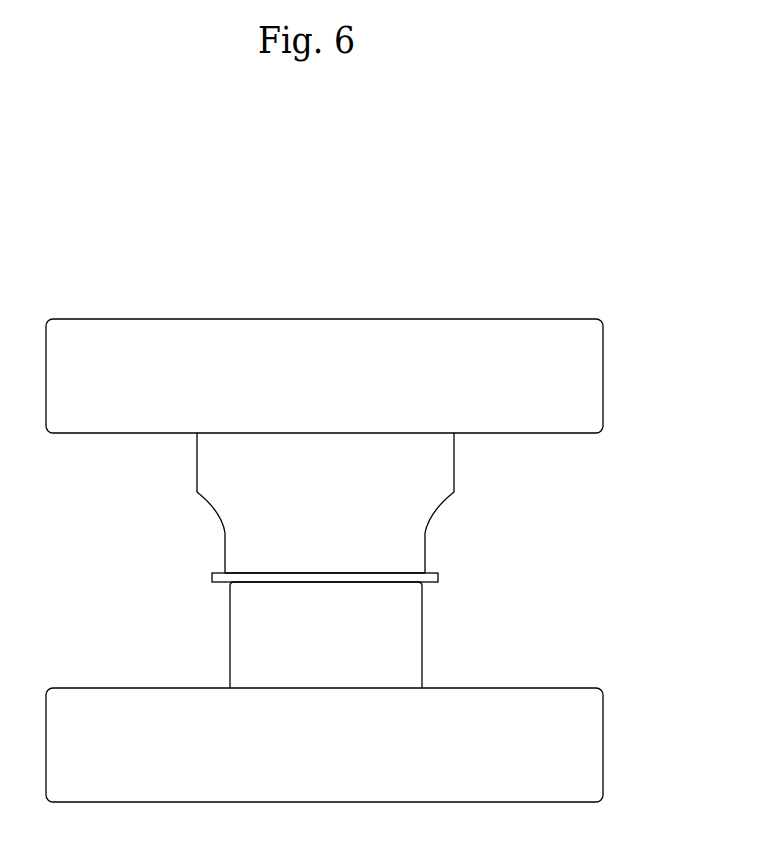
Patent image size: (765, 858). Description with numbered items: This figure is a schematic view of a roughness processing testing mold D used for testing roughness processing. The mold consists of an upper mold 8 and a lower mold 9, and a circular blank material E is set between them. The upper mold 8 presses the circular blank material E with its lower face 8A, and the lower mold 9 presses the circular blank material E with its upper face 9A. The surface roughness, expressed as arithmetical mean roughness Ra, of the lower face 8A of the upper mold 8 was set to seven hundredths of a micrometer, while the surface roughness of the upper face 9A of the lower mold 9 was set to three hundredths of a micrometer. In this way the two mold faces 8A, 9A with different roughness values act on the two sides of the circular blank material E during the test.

The roughness processing testing mold D is at (567, 312).
The upper mold 8 is at (432, 477).
The lower face of the upper mold 8A is at (323, 582).
The lower mold 9 is at (398, 650).
The upper face of the lower mold 9A is at (282, 582).
The circular blank material E is at (387, 573).